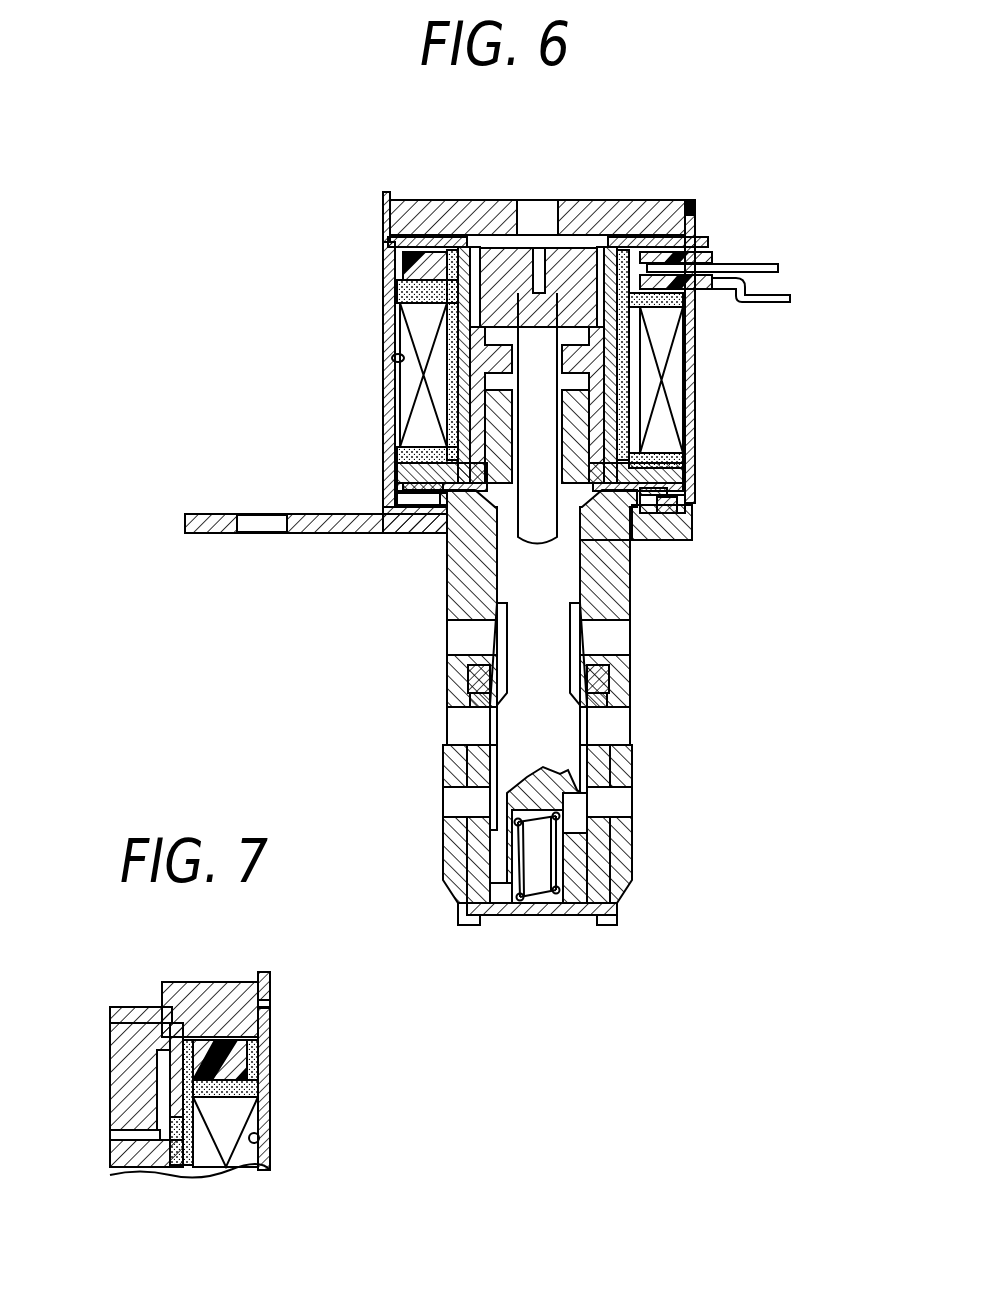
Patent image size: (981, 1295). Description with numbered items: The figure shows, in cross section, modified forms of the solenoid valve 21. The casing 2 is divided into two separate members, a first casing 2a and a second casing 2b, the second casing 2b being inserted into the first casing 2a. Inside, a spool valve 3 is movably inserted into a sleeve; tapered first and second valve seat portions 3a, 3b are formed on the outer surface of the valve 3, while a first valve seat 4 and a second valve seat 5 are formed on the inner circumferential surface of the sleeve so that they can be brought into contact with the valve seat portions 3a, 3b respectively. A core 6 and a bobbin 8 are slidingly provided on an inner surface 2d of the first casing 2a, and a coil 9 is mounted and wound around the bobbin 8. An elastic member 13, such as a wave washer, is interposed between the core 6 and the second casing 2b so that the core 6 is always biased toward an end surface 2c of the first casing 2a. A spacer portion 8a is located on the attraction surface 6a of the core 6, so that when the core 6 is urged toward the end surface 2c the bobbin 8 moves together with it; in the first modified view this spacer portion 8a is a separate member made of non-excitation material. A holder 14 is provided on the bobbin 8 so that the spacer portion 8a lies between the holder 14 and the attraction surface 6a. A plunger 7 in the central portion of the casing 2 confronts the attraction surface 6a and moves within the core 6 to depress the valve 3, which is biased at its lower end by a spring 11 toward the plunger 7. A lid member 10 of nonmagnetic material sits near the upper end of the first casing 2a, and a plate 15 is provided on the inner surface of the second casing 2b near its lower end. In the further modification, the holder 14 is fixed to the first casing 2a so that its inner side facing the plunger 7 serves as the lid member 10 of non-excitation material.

In FIG. 6, the casing 2 is at (703, 365).
In FIG. 6, the first casing 2a is at (690, 473).
In FIG. 7, the first casing 2a is at (265, 1077).
In FIG. 6, the second casing 2b is at (625, 605).
In FIG. 6, the end surface of the first casing 2c is at (690, 200).
In FIG. 7, the end surface of the first casing 2c is at (268, 974).
In FIG. 6, the inner surface of the first casing 2d is at (392, 358).
In FIG. 7, the inner surface of the first casing 2d is at (262, 1138).
In FIG. 6, the spool valve 3 is at (512, 580).
In FIG. 6, the first valve seat portion 3a is at (478, 727).
In FIG. 6, the second valve seat portion 3b is at (615, 697).
In FIG. 6, the first valve seat 4 is at (612, 848).
In FIG. 6, the second valve seat 5 is at (612, 682).
In FIG. 6, the core 6 is at (430, 418).
In FIG. 7, the core 6 is at (157, 1168).
In FIG. 6, the attraction surface 6a is at (497, 340).
In FIG. 7, the attraction surface 6a is at (118, 1135).
In FIG. 6, the plunger 7 is at (570, 248).
In FIG. 7, the plunger 7 is at (120, 1062).
In FIG. 6, the bobbin 8 is at (400, 455).
In FIG. 7, the bobbin 8 is at (262, 1060).
In FIG. 6, the spacer portion 8a is at (465, 330).
In FIG. 7, the spacer portion 8a is at (170, 1120).
In FIG. 6, the coil 9 is at (680, 410).
In FIG. 7, the coil 9 is at (238, 1166).
In FIG. 6, the lid member 10 is at (425, 207).
In FIG. 7, the lid member 10 is at (137, 1010).
In FIG. 6, the spring 11 is at (538, 905).
In FIG. 6, the elastic member 13 is at (662, 514).
In FIG. 6, the holder 14 is at (622, 205).
In FIG. 7, the holder 14 is at (217, 993).
In FIG. 6, the plate 15 is at (578, 918).
In FIG. 6, the solenoid valve 21 is at (722, 529).